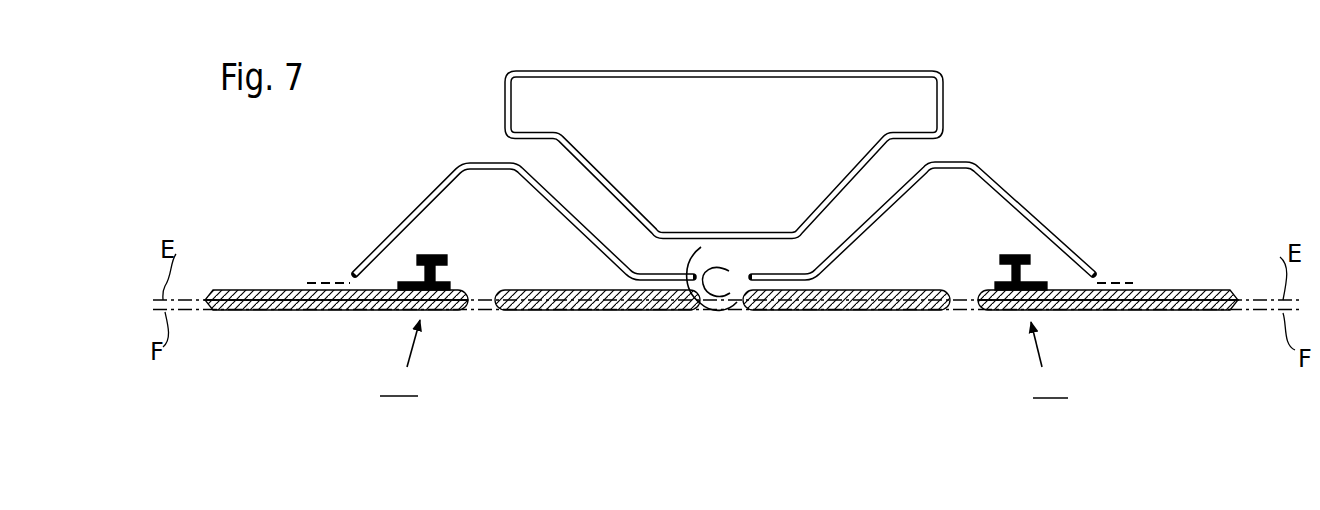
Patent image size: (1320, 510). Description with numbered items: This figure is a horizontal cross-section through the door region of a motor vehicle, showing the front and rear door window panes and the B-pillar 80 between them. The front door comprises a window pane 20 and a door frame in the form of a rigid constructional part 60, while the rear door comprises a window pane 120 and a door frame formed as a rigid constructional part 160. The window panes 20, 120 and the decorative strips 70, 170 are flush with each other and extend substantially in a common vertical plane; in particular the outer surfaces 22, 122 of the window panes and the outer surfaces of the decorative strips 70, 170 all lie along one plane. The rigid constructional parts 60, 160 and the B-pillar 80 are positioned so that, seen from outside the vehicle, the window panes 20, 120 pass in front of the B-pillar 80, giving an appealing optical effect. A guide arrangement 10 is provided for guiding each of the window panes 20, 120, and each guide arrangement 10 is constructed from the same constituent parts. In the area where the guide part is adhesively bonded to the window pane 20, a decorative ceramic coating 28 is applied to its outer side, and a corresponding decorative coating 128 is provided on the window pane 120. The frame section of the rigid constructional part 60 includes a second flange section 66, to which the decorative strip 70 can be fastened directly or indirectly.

The guide arrangement 10 is at (388, 203).
The window pane 20 is at (302, 300).
The outer surface 22 is at (262, 312).
The decorative ceramic coating 28 is at (247, 288).
The rigid constructional part 60 is at (430, 195).
The second flange section 66 is at (672, 273).
The decorative strip 70 is at (578, 310).
The B-pillar 80 is at (831, 67).
The window pane 120 is at (1082, 305).
The outer surface 122 is at (1177, 313).
The decorative coating 128 is at (1157, 287).
The rigid constructional part 160 is at (1007, 176).
The decorative strip 170 is at (847, 310).